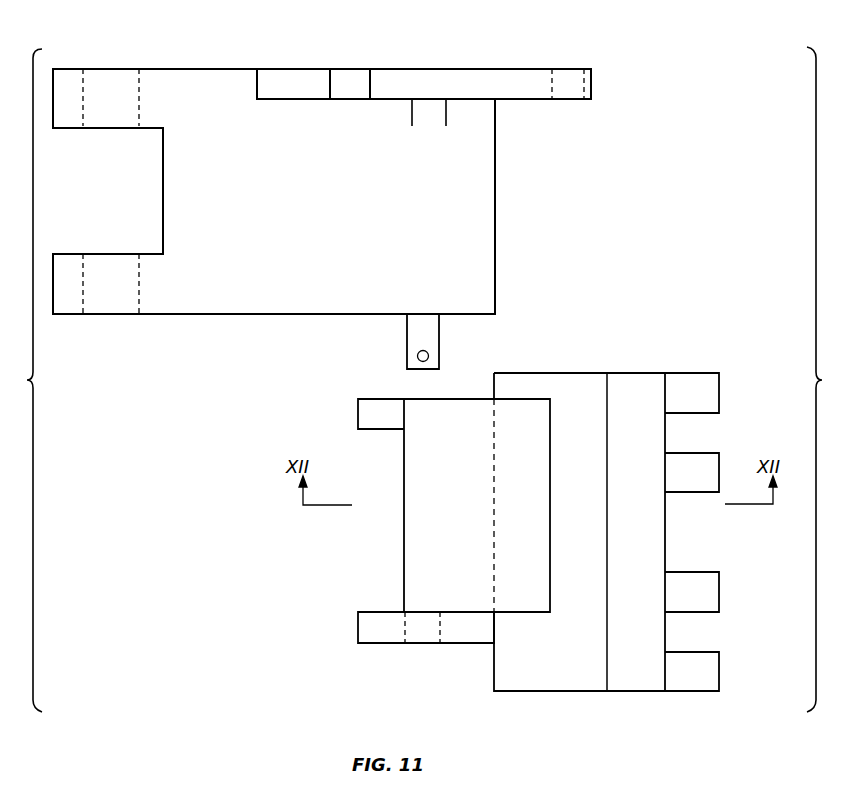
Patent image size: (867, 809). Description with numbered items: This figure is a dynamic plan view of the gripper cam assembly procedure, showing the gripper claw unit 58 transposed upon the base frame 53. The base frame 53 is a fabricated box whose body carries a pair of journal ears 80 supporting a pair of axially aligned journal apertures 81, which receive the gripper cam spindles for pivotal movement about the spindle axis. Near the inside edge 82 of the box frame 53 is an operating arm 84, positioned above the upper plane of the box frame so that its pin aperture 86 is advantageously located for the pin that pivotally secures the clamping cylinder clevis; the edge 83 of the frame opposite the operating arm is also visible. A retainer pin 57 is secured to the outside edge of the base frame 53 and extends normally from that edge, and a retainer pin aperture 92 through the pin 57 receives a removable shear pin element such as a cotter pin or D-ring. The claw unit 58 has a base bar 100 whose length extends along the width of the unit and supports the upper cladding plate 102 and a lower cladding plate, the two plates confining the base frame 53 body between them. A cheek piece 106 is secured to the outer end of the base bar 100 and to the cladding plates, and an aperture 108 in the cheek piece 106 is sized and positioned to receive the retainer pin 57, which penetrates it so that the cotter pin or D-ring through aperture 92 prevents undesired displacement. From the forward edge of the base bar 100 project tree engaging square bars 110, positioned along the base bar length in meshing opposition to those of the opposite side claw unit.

The base frame 53 is at (322, 191).
The retainer pin 57 is at (410, 334).
The gripper claw unit 58 is at (614, 362).
The journal ears 80 is at (63, 130).
The journal apertures 81 is at (110, 82).
The inside edge 82 is at (235, 67).
The bottom edge 83 is at (255, 316).
The operating arm 84 is at (410, 85).
The pin aperture 86 is at (563, 80).
The retainer pin aperture 92 is at (418, 355).
The base bar 100 is at (579, 532).
The upper cladding plate 102 is at (477, 505).
The cheek piece 106 is at (424, 546).
The cheek piece aperture 108 is at (428, 630).
The square bars 110 is at (721, 586).